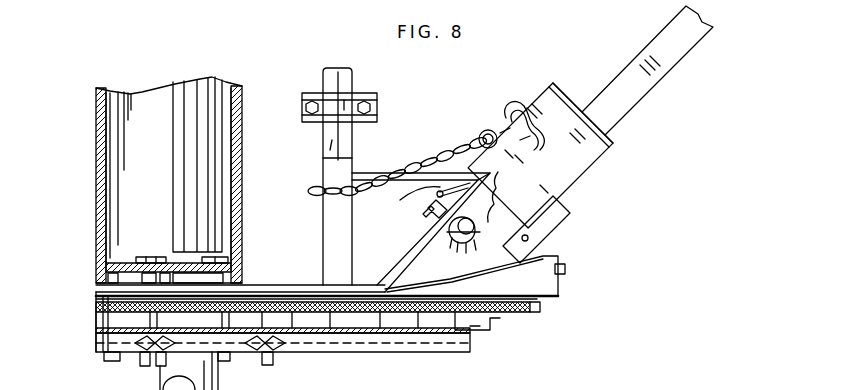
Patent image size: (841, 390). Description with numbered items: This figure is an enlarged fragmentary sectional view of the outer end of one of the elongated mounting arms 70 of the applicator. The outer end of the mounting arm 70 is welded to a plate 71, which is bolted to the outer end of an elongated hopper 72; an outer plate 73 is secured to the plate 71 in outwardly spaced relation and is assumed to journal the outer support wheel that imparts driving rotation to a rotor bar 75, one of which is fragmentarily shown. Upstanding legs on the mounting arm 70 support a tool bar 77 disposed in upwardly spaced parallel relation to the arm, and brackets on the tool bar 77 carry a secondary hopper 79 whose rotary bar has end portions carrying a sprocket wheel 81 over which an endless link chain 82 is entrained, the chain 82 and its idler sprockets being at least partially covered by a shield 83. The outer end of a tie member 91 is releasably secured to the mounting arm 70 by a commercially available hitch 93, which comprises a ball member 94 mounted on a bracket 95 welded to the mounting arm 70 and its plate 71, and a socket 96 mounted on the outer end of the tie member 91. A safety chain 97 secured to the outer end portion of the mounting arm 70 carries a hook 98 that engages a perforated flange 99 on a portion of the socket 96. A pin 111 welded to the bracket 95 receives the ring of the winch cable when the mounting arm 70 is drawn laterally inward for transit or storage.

The mounting arm 70 is at (330, 236).
The plate 71 is at (299, 283).
The hopper 72 is at (86, 214).
The outer plate 73 is at (96, 346).
The rotor bar 75 is at (187, 170).
The tool bar 77 is at (346, 86).
The secondary hopper 79 is at (574, 274).
The sprocket wheel 81 is at (488, 331).
The endless link chain 82 is at (406, 316).
The shield 83 is at (341, 332).
The tie member 91 is at (683, 43).
The hitch 93 is at (594, 174).
The ball member 94 is at (460, 244).
The bracket 95 is at (410, 251).
The socket 96 is at (546, 284).
The safety chain 97 is at (425, 152).
The hook 98 is at (512, 105).
The perforated flange 99 is at (553, 84).
The pin 111 is at (437, 193).